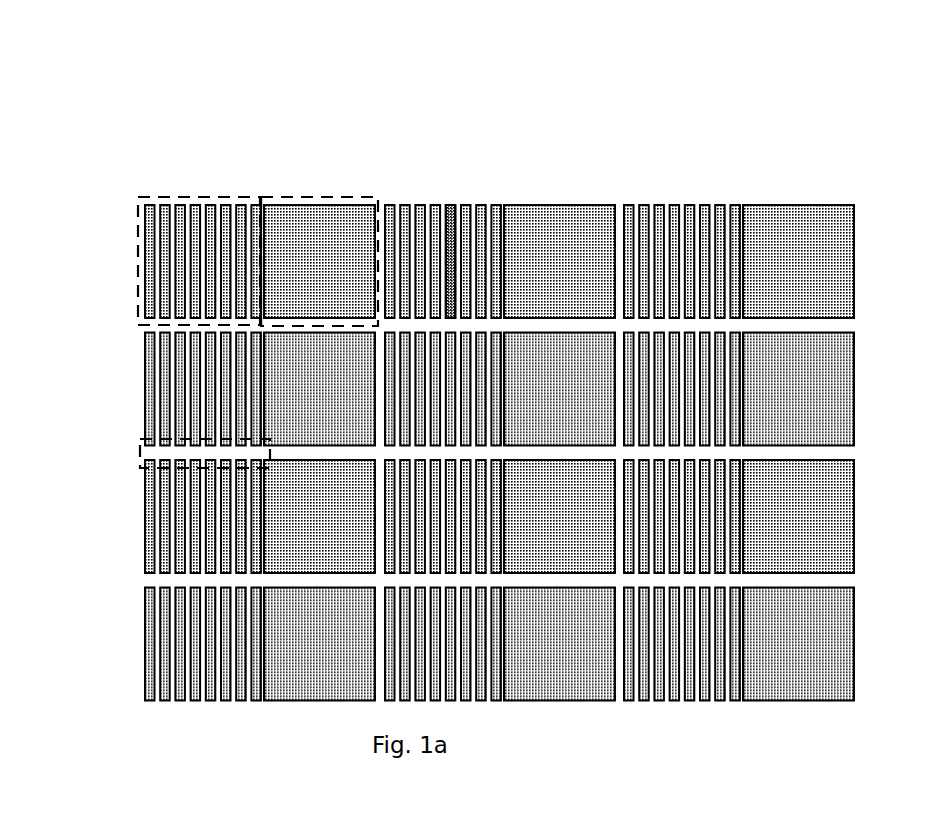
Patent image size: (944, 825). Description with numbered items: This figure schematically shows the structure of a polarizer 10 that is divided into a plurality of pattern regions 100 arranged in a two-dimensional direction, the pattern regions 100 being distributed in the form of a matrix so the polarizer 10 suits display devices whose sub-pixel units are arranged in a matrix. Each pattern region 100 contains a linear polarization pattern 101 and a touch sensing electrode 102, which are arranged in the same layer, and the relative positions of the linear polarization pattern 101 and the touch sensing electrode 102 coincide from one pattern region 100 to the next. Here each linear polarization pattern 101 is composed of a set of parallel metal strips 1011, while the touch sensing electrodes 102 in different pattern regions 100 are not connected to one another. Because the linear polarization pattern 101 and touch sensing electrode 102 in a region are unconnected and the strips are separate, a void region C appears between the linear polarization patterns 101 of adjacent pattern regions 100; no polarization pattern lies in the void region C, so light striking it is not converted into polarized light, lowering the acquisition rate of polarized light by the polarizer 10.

The polarizer 10 is at (85, 91).
The pattern region 100 is at (360, 110).
The linear polarization pattern 101 is at (230, 198).
The touch sensing electrode 102 is at (313, 198).
The metal strip 1011 is at (453, 213).
The void region C is at (140, 448).